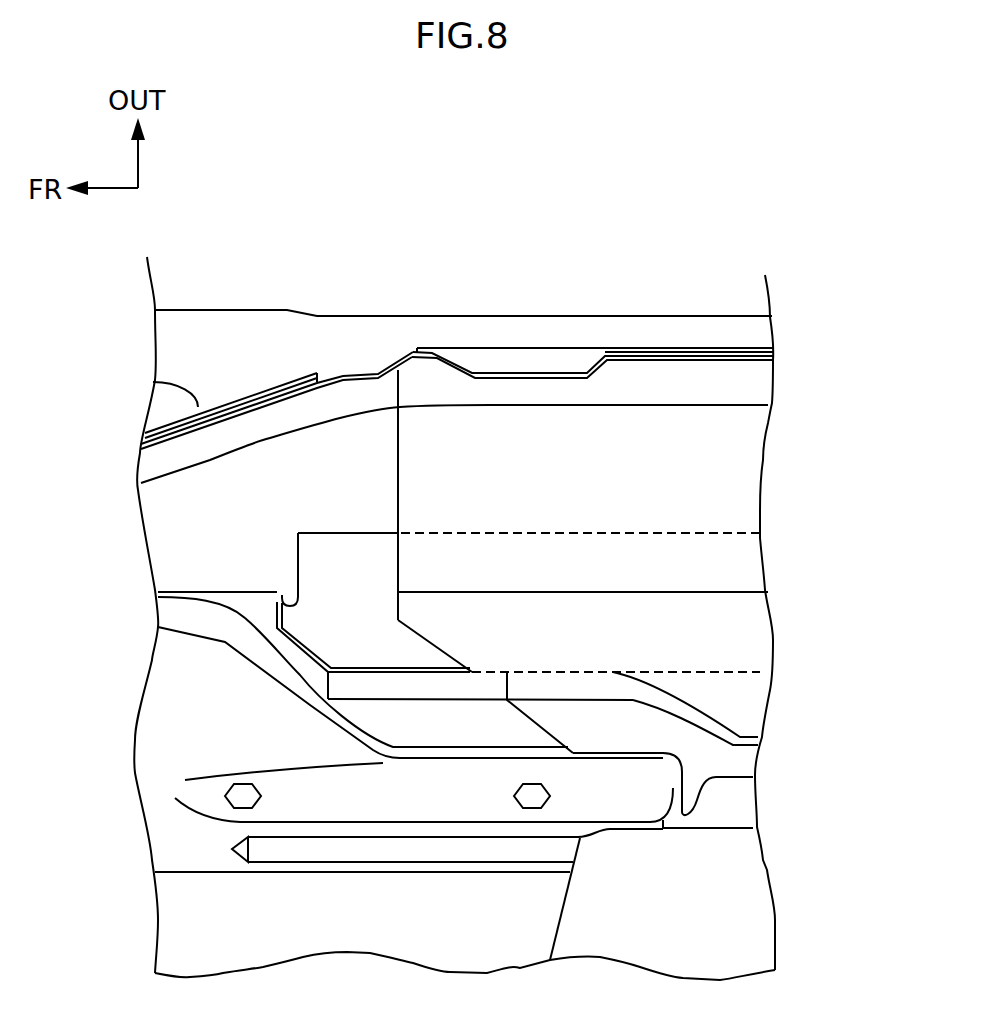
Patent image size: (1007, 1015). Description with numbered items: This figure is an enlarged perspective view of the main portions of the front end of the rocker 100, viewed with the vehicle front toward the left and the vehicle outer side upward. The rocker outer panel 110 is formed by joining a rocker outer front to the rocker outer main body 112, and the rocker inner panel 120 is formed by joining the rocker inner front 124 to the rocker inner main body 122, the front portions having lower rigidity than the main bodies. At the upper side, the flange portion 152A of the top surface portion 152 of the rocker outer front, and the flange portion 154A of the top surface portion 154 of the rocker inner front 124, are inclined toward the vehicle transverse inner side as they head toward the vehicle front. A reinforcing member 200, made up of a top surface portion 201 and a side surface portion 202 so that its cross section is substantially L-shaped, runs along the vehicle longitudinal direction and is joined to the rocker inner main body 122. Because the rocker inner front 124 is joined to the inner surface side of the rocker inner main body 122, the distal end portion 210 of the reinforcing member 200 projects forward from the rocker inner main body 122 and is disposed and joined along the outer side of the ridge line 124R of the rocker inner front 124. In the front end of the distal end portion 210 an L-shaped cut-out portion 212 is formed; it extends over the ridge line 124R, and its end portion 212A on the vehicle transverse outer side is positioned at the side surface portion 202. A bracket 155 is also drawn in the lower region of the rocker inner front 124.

The rocker 100 is at (815, 242).
The rocker outer panel 110 is at (700, 316).
The rocker outer main body 112 is at (593, 325).
The rocker inner panel 120 is at (766, 431).
The rocker inner main body 122 is at (735, 465).
The rocker inner front 124 is at (173, 566).
The ridge line 124R is at (257, 592).
The top surface portion 152 is at (210, 337).
The flange portion 152A is at (280, 374).
The top surface portion 154 is at (195, 508).
The flange portion 154A is at (360, 397).
The bracket 155 is at (253, 604).
The reinforcing member 200 is at (731, 532).
The top surface portion 201 is at (552, 558).
The side surface portion 202 is at (412, 632).
The distal end portion 210 is at (360, 558).
The cut-out portion 212 is at (292, 575).
The end portion 212A is at (288, 606).